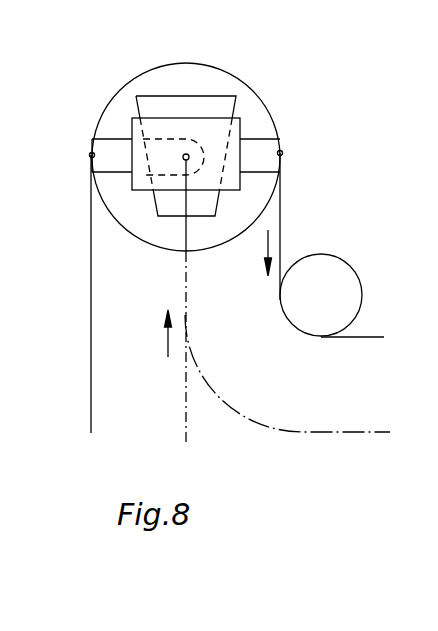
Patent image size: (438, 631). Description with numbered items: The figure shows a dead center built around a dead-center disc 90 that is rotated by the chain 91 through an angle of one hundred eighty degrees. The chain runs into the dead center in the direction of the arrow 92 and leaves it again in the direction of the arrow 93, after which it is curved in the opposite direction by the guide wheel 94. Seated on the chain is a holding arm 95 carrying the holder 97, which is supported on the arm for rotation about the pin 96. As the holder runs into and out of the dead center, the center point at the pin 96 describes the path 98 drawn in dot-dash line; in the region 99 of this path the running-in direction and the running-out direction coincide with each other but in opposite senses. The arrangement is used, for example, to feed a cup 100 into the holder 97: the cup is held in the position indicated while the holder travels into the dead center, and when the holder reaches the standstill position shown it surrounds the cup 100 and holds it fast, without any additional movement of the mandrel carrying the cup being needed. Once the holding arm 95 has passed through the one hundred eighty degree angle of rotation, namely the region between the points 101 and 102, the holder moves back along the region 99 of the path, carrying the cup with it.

The dead-center disc 90 is at (262, 193).
The chain 91 is at (90, 290).
The arrow 92 is at (167, 340).
The arrow 93 is at (267, 245).
The guide wheel 94 is at (325, 270).
The holding arm 95 is at (105, 152).
The pin 96 is at (190, 157).
The holder 97 is at (232, 153).
The path 98 is at (185, 428).
The region of the path 99 is at (185, 280).
The cup 100 is at (220, 107).
The point 101 is at (89, 156).
The point 102 is at (283, 152).